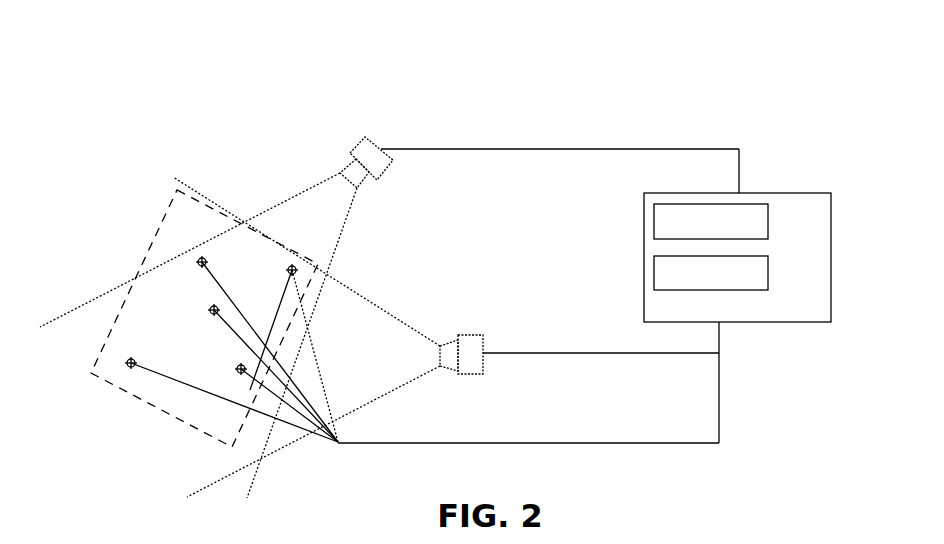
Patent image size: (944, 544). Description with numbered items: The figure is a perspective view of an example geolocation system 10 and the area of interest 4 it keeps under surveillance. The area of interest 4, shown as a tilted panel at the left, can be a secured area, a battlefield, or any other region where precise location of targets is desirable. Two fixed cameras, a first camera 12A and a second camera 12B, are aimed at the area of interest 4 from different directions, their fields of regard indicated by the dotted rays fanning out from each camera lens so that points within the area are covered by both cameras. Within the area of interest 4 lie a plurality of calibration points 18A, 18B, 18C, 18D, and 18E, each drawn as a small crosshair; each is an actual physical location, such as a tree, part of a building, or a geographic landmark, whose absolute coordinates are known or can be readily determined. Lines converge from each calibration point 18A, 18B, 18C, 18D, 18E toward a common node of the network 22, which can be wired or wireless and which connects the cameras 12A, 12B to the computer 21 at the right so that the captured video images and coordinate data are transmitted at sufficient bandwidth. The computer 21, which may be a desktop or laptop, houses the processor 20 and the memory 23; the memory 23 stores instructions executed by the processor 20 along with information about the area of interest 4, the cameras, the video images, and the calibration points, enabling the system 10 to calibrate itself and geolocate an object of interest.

The system 10 is at (519, 76).
The area of interest 4 is at (156, 330).
The first camera 12A is at (357, 150).
The second camera 12B is at (476, 333).
The calibration point 18A is at (207, 243).
The calibration point 18B is at (309, 283).
The calibration point 18C is at (238, 388).
The calibration point 18D is at (125, 385).
The calibration point 18E is at (195, 298).
The processor 20 is at (768, 230).
The computer 21 is at (737, 210).
The network 22 is at (719, 377).
The memory 23 is at (768, 283).